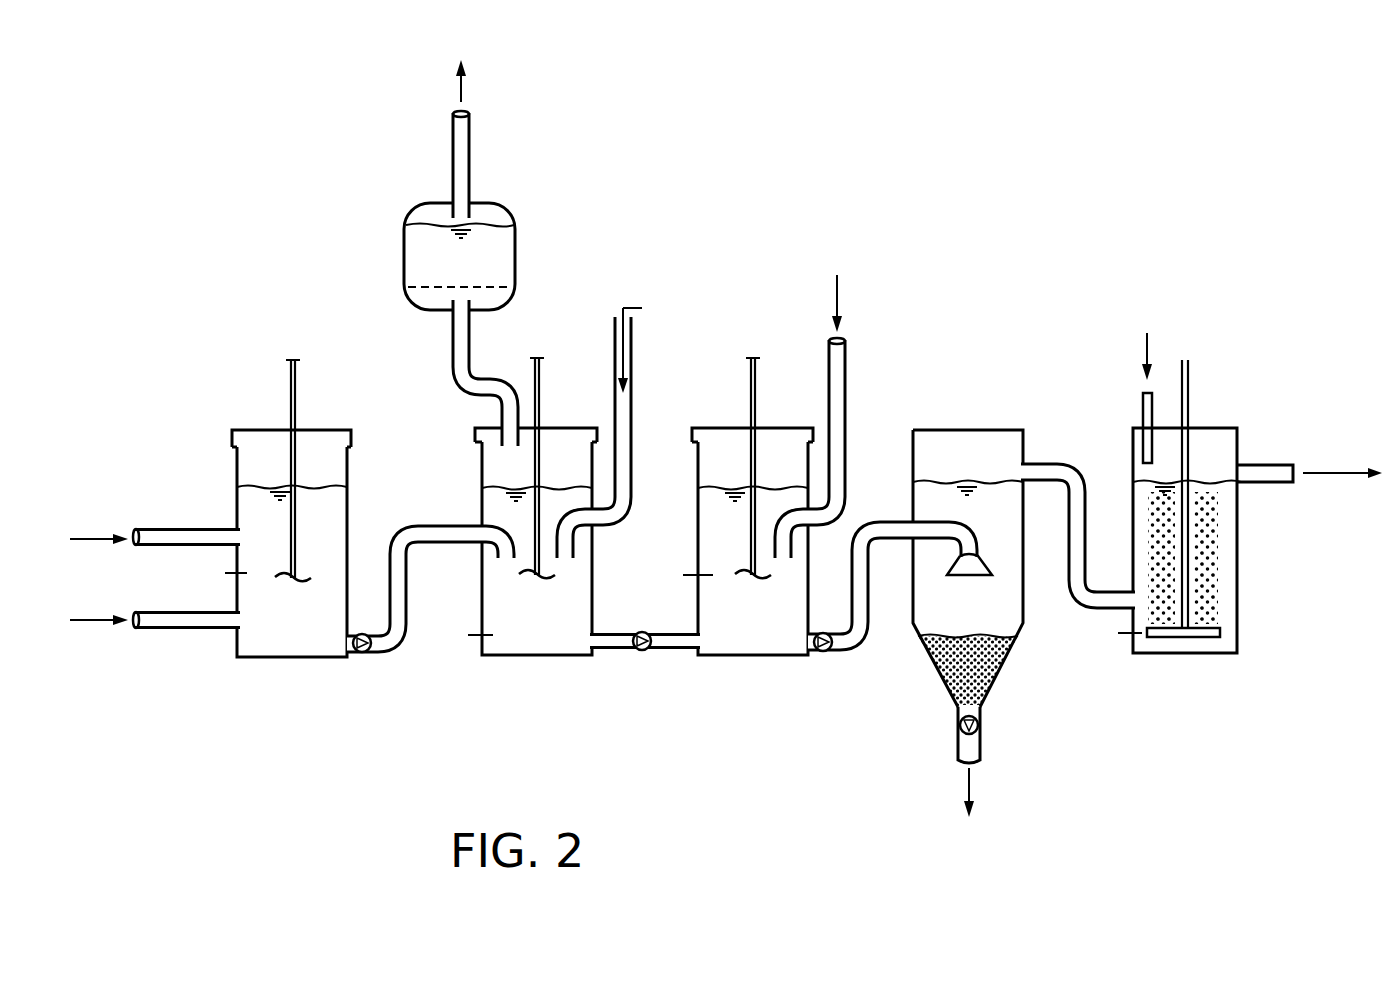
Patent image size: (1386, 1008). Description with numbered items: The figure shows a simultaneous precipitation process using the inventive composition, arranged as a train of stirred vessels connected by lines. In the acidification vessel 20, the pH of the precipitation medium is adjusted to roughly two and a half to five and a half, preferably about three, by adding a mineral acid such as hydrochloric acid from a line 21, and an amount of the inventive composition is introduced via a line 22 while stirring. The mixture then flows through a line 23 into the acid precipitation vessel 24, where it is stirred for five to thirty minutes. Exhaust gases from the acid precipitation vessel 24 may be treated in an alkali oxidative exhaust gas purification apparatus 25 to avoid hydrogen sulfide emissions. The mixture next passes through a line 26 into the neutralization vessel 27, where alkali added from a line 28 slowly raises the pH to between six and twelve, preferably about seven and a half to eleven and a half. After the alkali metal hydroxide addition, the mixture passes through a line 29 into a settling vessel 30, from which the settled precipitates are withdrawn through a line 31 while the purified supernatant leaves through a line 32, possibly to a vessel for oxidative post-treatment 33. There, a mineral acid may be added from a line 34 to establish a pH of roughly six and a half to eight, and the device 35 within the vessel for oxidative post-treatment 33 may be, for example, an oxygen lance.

The acidification vessel 20 is at (308, 641).
The line 21 is at (155, 641).
The line 22 is at (155, 517).
The line 23 is at (426, 571).
The acid precipitation vessel 24 is at (560, 638).
The alkali oxidative exhaust gas purification apparatus 25 is at (474, 278).
The line 26 is at (670, 650).
The neutralization vessel 27 is at (774, 636).
The line 28 is at (847, 430).
The line 29 is at (872, 607).
The settling vessel 30 is at (990, 625).
The line 31 is at (994, 762).
The line 32 is at (1094, 478).
The vessel for oxidative post-treatment 33 is at (1213, 437).
The line 34 is at (1152, 376).
The device 35 is at (1183, 479).